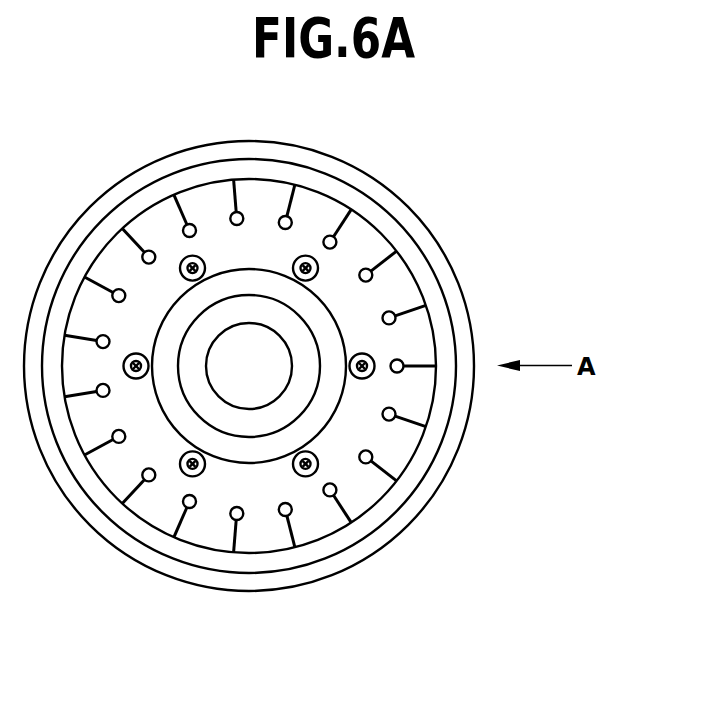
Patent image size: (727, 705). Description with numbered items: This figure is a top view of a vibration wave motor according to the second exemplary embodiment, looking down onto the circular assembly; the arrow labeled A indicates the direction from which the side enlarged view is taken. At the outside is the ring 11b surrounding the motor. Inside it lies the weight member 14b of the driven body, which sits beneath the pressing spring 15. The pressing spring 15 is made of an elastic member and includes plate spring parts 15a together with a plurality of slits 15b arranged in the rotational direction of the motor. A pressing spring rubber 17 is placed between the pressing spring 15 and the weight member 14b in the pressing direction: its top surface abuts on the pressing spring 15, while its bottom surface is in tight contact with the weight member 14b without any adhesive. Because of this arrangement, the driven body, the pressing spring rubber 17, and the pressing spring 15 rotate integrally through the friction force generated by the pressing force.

The outer housing rim 11b is at (352, 162).
The weight member 14b is at (398, 213).
The pressing spring 15 is at (336, 366).
The plate spring parts 15a is at (407, 448).
The slits 15b is at (394, 468).
The pressing spring rubber 17 is at (410, 305).